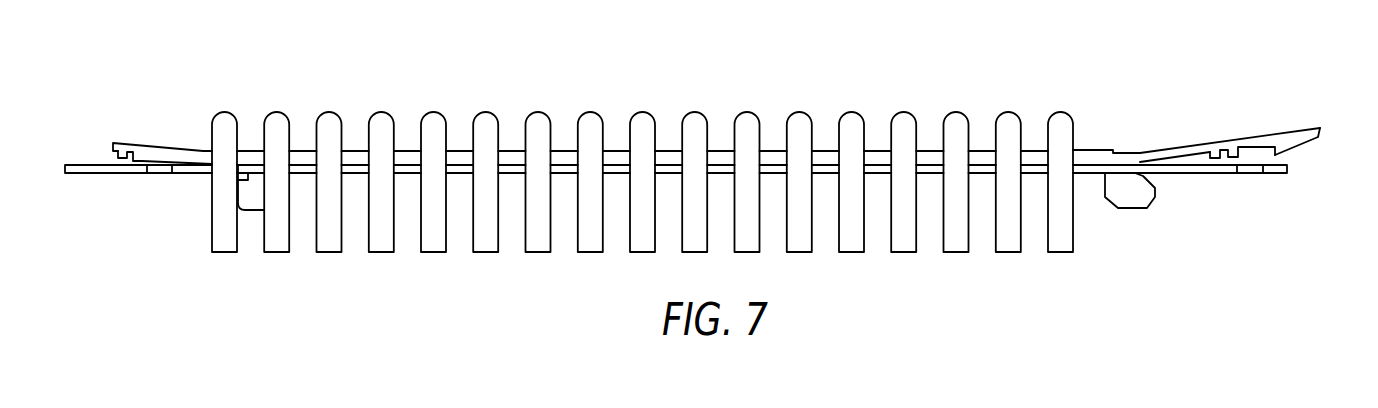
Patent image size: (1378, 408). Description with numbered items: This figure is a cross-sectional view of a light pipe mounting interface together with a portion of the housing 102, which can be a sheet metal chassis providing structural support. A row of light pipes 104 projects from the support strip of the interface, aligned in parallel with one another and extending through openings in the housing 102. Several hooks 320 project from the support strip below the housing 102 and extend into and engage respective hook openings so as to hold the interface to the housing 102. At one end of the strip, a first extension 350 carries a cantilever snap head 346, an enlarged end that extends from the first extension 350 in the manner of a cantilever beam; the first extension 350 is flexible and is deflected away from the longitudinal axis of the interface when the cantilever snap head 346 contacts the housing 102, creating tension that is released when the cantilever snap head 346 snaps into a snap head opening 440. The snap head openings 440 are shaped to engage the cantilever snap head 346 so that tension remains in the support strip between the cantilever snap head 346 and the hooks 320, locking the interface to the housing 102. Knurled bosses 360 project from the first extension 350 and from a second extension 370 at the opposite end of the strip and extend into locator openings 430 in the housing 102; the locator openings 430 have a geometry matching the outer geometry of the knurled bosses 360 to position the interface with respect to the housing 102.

The housing 102 is at (90, 175).
The light pipes 104 is at (697, 112).
The hooks 320 is at (258, 203).
The cantilever snap head 346 is at (1298, 150).
The first extension 350 is at (1230, 138).
The knurled bosses 360 is at (113, 152).
The second extension 370 is at (147, 143).
The locator openings 430 is at (163, 170).
The snap head openings 440 is at (1290, 168).